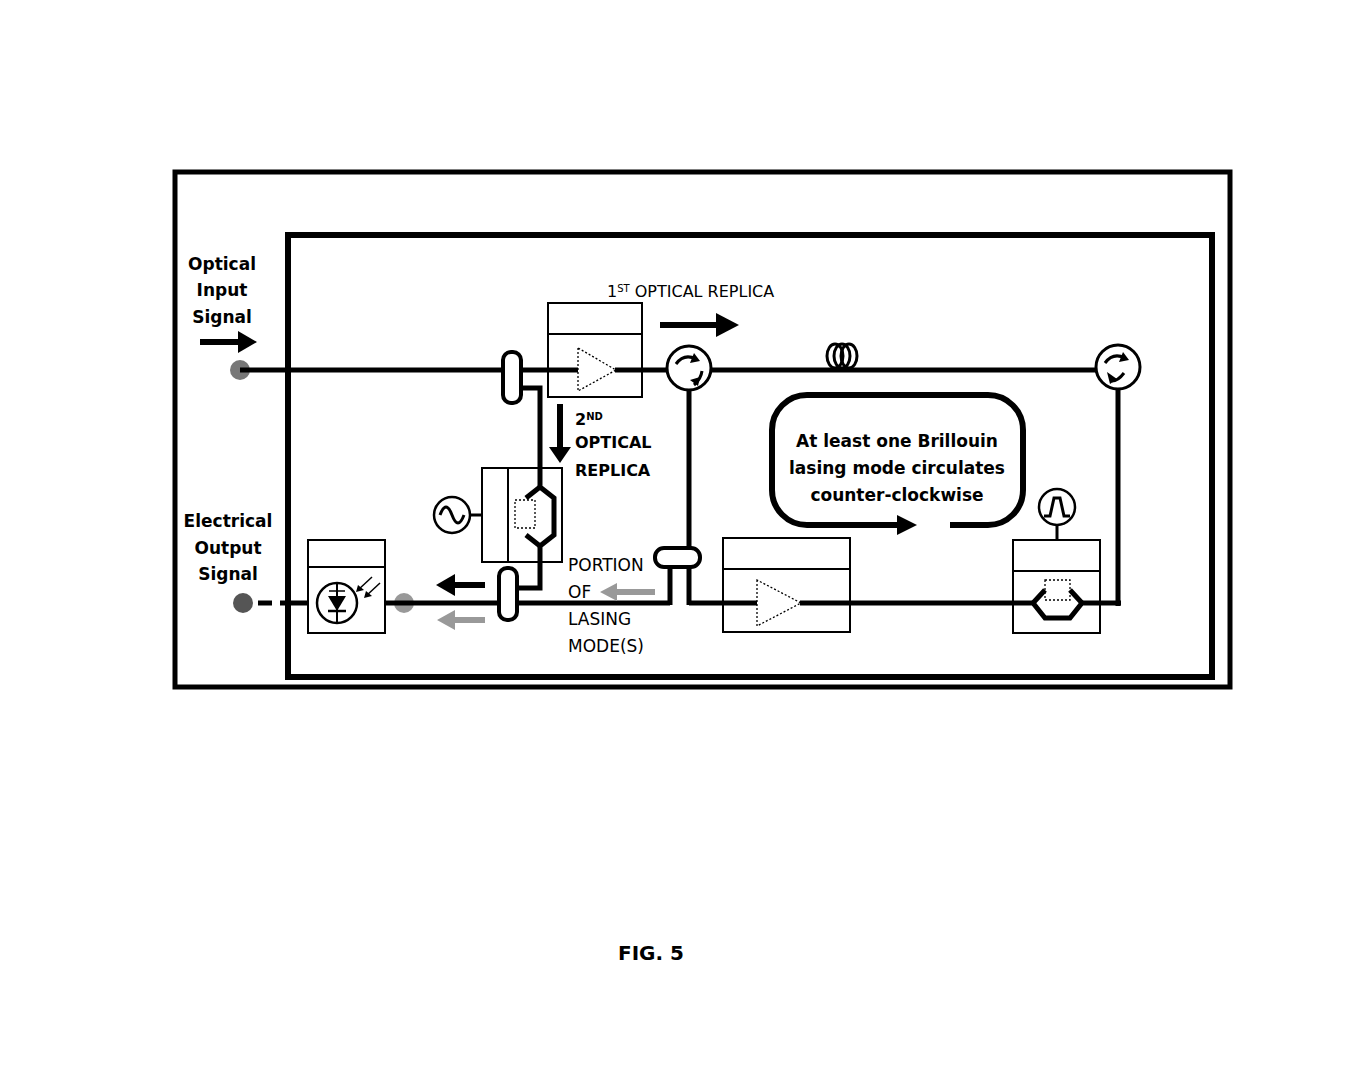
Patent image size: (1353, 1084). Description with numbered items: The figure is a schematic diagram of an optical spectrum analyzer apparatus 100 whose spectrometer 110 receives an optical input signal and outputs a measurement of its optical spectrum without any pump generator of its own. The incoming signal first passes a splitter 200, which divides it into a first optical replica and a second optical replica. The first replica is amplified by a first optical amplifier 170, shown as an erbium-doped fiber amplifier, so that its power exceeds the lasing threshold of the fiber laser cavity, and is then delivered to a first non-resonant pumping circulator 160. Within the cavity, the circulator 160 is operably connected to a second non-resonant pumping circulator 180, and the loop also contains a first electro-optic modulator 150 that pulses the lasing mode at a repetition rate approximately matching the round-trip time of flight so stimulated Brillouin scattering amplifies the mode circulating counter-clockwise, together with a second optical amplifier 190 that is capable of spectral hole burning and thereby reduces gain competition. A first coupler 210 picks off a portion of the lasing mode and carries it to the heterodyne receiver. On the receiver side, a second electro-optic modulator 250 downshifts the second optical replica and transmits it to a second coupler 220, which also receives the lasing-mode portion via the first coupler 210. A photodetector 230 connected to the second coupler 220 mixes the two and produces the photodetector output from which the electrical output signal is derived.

The optical spectrum analyzer apparatus 100 is at (1108, 168).
The spectrometer 110 is at (1113, 232).
The first electro-optic modulator 150 is at (1080, 633).
The first non-resonant pumping circulator 160 is at (705, 344).
The first optical amplifier 170 is at (570, 303).
The second non-resonant pumping circulator 180 is at (1135, 352).
The second optical amplifier 190 is at (787, 632).
The splitter 200 is at (505, 353).
The first coupler 210 is at (675, 567).
The second coupler 220 is at (502, 620).
The photodetector 230 is at (312, 633).
The second electro-optic modulator 250 is at (557, 563).